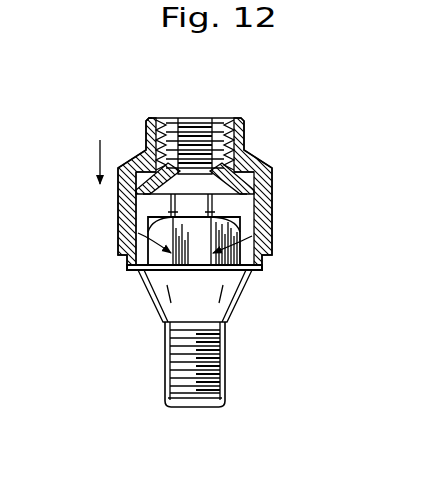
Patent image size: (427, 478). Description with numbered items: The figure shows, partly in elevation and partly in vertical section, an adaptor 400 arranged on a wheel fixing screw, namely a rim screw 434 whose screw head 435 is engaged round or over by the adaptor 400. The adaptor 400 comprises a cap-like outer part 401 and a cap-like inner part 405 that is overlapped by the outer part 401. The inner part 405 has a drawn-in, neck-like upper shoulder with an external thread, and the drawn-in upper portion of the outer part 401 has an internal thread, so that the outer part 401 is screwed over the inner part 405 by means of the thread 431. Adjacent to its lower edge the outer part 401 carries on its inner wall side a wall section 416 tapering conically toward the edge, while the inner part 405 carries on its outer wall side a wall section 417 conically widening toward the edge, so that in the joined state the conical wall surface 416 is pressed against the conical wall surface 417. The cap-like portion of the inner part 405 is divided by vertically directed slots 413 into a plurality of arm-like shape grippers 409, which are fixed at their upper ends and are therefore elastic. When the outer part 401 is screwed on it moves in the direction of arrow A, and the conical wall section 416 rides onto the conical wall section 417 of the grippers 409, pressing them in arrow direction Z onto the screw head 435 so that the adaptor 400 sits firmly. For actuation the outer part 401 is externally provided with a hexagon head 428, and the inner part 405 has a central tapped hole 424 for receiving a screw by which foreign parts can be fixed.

The adaptor 400 is at (284, 163).
The outer part 401 is at (256, 161).
The inner part 405 is at (221, 118).
The shape grippers 409 is at (268, 249).
The slots 413 is at (214, 200).
The conical wall section of outer part 416 is at (134, 241).
The conical wall section of inner part 417 is at (124, 261).
The tapped hole 424 is at (188, 117).
The hexagon head 428 is at (146, 130).
The thread 431 is at (163, 122).
The rim screw 434 is at (165, 373).
The screw head 435 is at (248, 282).
The arrow A is at (100, 153).
The arrow direction Z is at (140, 275).